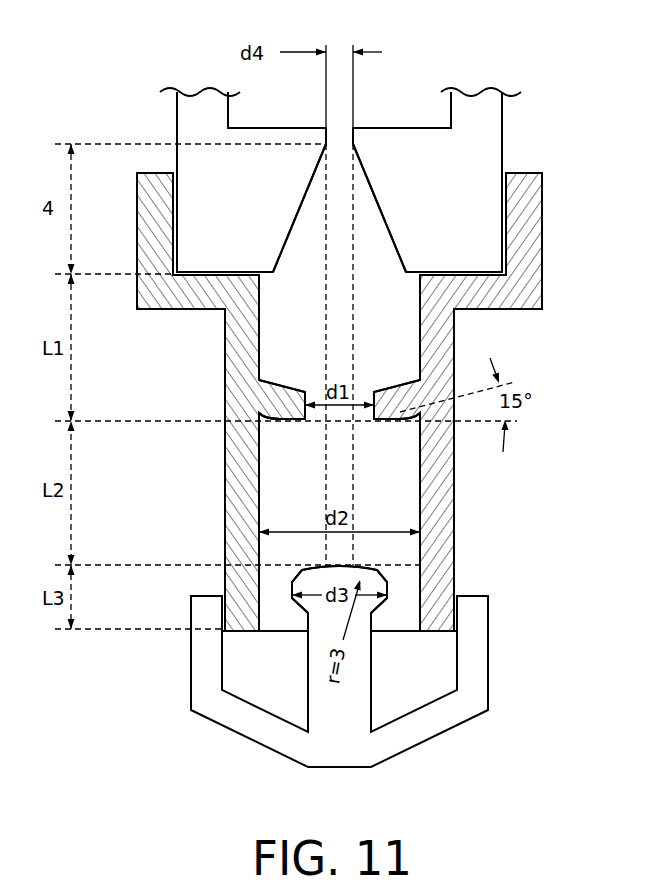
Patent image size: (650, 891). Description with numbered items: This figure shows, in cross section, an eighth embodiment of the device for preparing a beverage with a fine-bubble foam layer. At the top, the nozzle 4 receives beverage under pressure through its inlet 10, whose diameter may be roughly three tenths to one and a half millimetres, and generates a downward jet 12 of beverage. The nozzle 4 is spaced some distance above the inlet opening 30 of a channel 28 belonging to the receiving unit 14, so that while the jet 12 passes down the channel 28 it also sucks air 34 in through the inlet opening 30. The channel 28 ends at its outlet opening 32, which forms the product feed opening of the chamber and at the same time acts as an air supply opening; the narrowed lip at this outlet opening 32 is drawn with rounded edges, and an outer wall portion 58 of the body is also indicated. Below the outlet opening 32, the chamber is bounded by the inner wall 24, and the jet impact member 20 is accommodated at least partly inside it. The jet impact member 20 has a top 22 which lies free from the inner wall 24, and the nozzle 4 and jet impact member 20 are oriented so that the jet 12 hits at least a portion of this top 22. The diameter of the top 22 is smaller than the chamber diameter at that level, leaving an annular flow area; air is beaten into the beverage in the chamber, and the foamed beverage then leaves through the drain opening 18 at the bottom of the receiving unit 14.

The inlet 10 is at (340, 128).
The nozzle 4 is at (353, 136).
The receiving unit 14 is at (225, 385).
The inlet opening 30 is at (287, 282).
The channel 28 is at (259, 327).
The air 34 is at (366, 386).
The outer wall of the nozzle body 58 is at (443, 328).
The outlet opening 32 is at (305, 421).
The inner wall 24 is at (259, 496).
The jet 12 is at (353, 462).
The drain opening 18 is at (262, 740).
The top 22 is at (310, 572).
The jet impact member 20 is at (372, 572).